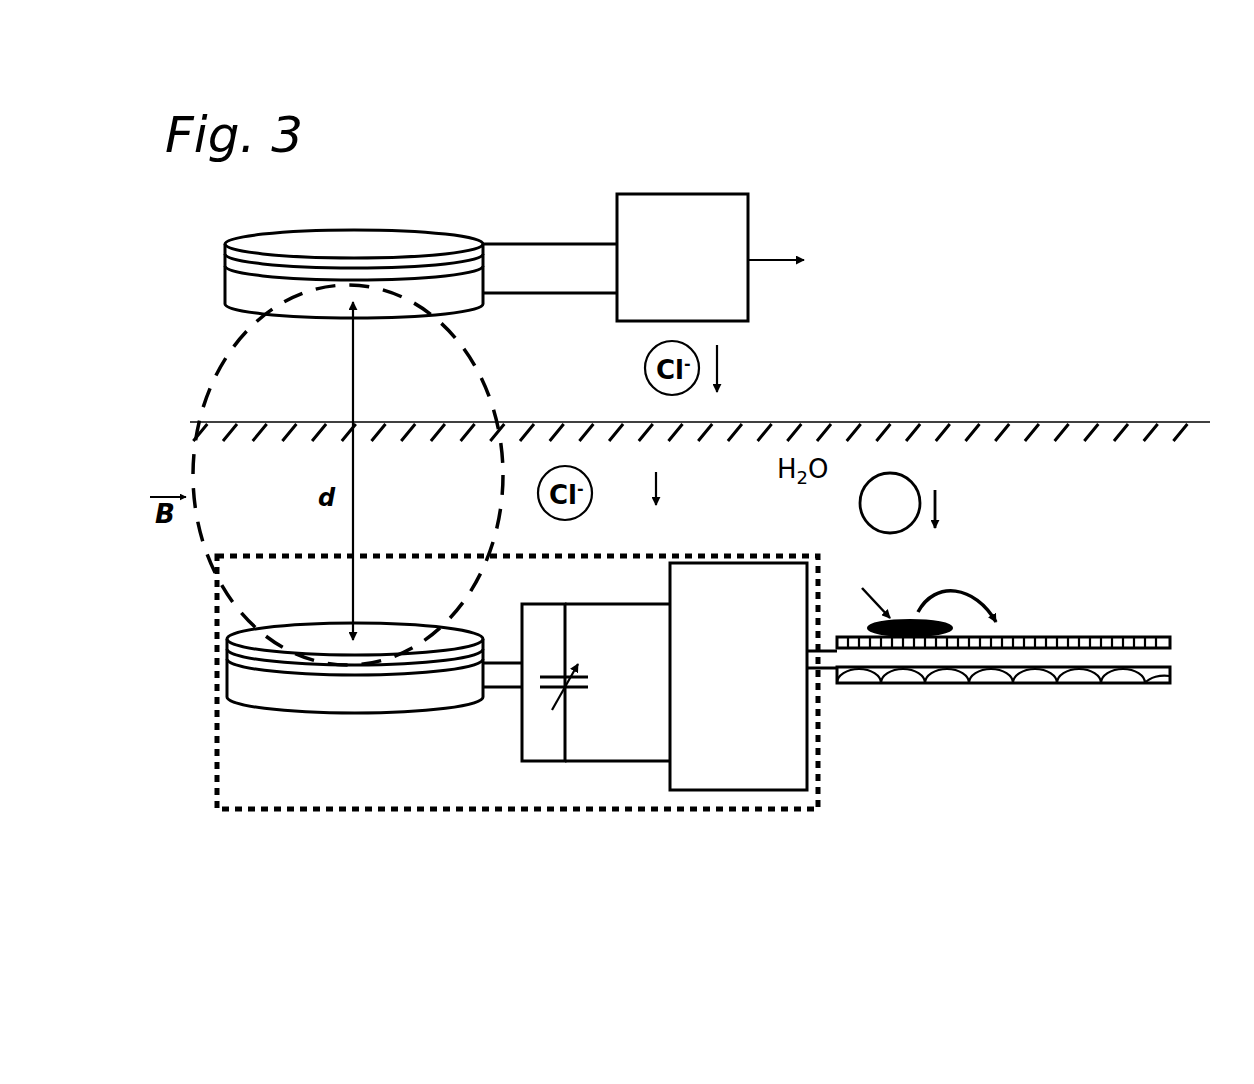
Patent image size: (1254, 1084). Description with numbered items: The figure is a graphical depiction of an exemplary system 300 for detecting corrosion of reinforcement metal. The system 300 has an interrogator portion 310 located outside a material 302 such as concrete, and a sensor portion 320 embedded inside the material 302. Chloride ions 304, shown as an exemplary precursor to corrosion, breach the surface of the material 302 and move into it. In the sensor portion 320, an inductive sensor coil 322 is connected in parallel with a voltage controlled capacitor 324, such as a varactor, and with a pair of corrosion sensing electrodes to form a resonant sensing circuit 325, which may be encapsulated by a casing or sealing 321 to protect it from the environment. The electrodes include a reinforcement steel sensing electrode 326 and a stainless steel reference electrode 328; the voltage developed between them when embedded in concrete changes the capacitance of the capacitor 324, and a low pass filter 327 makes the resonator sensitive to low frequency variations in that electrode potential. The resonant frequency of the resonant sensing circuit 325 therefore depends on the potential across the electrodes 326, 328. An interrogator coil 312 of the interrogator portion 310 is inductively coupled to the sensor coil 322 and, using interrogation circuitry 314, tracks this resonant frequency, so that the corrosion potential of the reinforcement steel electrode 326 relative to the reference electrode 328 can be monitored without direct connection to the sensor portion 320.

The system 300 is at (852, 196).
The material 302 is at (948, 421).
The Cl⁻ ions 304 is at (891, 473).
The interrogator portion 310 is at (590, 146).
The interrogator coil 312 is at (363, 228).
The interrogation circuitry 314 is at (508, 186).
The sensor portion 320 is at (517, 727).
The casing or sealing 321 is at (748, 812).
The inductive sensor coil 322 is at (275, 708).
The voltage controlled capacitor 324 is at (565, 700).
The resonant sensing circuit 325 is at (570, 736).
The reinforcement steel sensing electrode 326 is at (1100, 630).
The low pass filter 327 is at (738, 676).
The stainless steel reference electrode 328 is at (1045, 690).